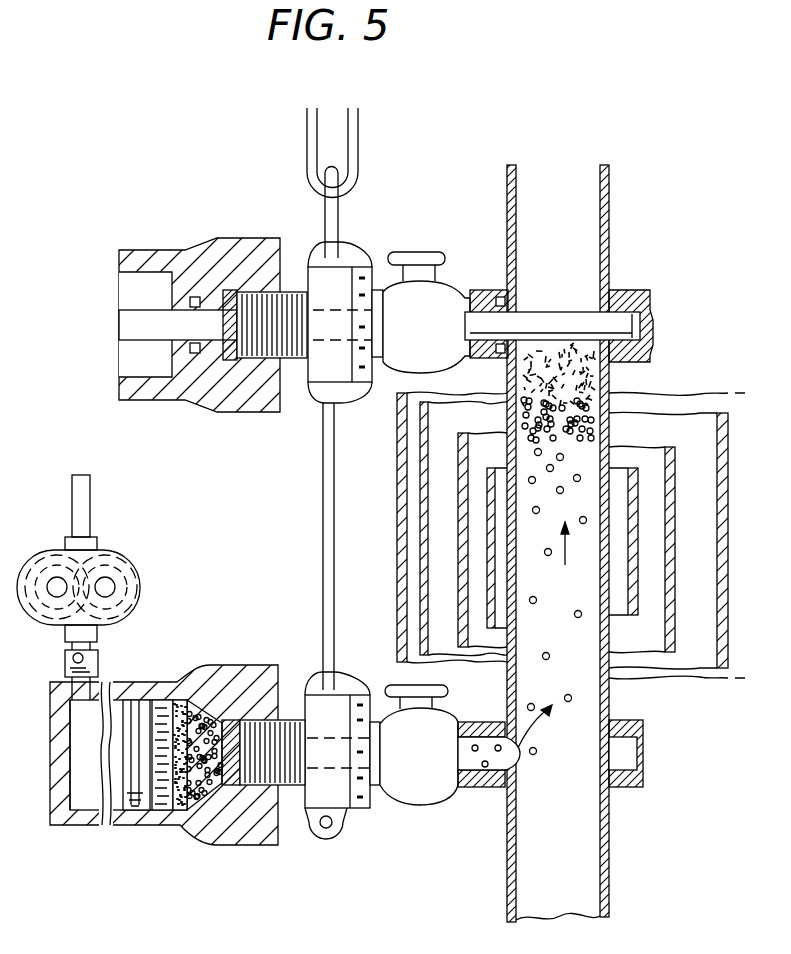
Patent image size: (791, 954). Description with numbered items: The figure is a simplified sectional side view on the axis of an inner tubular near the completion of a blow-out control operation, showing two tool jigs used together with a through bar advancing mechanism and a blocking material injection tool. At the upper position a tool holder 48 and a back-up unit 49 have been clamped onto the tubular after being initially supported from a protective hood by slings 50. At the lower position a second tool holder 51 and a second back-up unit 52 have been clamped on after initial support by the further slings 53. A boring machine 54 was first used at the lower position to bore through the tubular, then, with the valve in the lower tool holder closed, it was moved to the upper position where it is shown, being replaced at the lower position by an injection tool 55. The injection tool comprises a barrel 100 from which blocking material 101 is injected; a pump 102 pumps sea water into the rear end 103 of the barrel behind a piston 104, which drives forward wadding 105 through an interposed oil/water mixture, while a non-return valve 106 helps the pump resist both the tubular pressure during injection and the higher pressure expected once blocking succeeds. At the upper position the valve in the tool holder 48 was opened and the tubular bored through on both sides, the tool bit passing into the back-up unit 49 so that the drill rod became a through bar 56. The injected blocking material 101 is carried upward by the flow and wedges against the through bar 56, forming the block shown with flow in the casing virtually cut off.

The tool holder 48 is at (443, 303).
The back-up unit 49 is at (630, 297).
The slings 50 is at (360, 133).
The second tool holder 51 is at (480, 788).
The second back-up unit 52 is at (618, 790).
The further slings 53 is at (323, 548).
The boring machine 54 is at (185, 228).
The injection tool 55 is at (246, 854).
The through bar 56 is at (543, 322).
The barrel 100 is at (180, 822).
The blocking material 101 is at (208, 727).
The pump 102 is at (128, 557).
The rear end 103 is at (85, 793).
The piston 104 is at (120, 820).
The wadding 105 is at (180, 800).
The non-return valve 106 is at (99, 655).